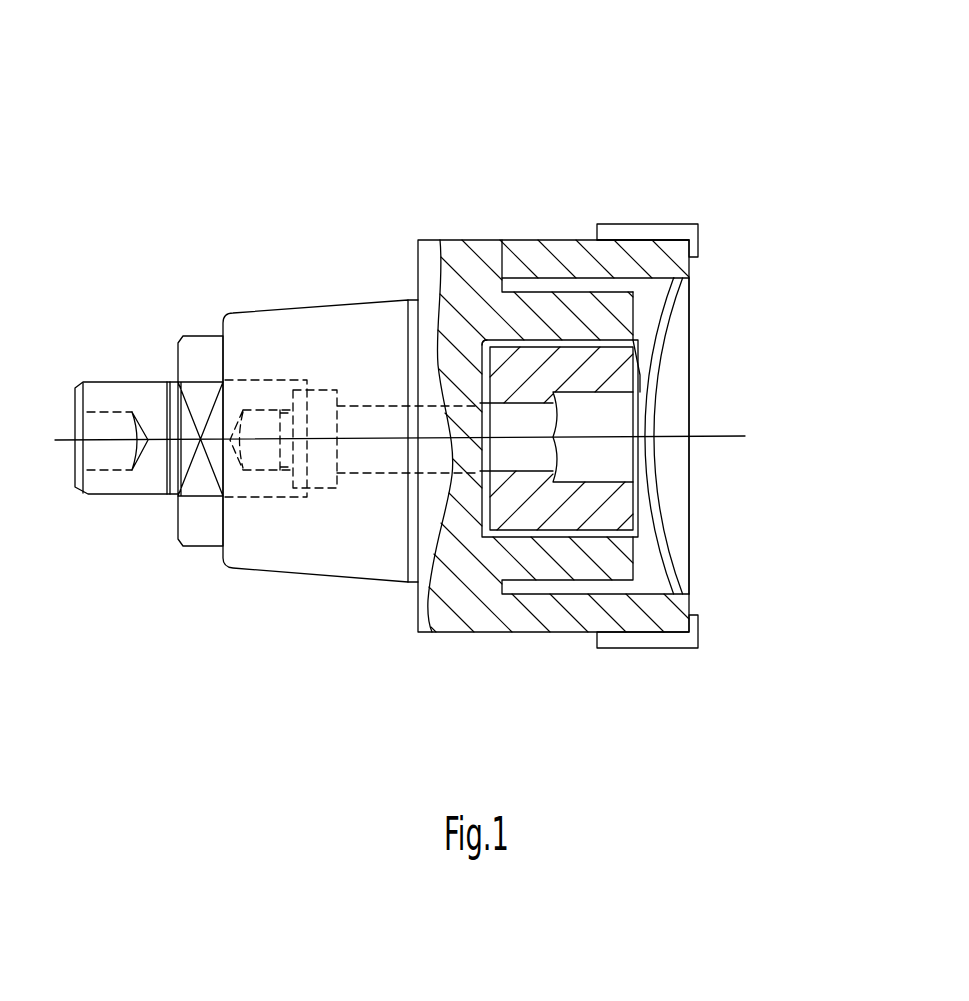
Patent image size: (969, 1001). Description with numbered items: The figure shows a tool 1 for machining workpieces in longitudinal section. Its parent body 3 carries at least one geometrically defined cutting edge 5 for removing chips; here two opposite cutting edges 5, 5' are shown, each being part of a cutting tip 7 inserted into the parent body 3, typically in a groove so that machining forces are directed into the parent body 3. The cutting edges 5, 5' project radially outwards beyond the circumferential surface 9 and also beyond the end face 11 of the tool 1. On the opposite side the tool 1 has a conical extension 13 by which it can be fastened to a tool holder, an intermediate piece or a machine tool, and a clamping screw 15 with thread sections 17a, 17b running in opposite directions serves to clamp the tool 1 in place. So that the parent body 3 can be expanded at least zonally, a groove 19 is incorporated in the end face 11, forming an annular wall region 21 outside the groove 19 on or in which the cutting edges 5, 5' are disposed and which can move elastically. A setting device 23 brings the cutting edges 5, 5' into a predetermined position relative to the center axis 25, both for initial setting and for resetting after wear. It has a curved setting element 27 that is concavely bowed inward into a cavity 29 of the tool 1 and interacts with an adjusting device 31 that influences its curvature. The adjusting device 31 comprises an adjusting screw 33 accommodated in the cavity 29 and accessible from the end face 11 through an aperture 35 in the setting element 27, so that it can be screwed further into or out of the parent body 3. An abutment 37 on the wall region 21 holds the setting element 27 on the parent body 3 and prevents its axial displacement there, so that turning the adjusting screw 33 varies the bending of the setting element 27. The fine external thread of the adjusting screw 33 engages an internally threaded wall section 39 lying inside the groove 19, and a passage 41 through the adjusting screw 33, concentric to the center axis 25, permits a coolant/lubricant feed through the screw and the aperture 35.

The tool 1 is at (333, 170).
The parent body 3 is at (457, 273).
The cutting edge 5 is at (669, 180).
The cutting edge 5' is at (694, 666).
The cutting tip 7 is at (622, 230).
The circumferential surface 9 is at (480, 232).
The end face 11 is at (694, 590).
The conical extension 13 is at (287, 322).
The clamping screw 15 is at (120, 398).
The thread section 17a is at (138, 497).
The thread section 17b is at (268, 490).
The groove 19 is at (530, 288).
The annular wall region 21 is at (547, 262).
The setting device 23 is at (678, 333).
The center axis 25 is at (703, 435).
The setting element 27 is at (650, 360).
The cavity 29 is at (644, 307).
The adjusting device 31 is at (477, 366).
The adjusting screw 33 is at (525, 513).
The aperture 35 is at (645, 465).
The abutment 37 is at (677, 276).
The wall section 39 is at (583, 320).
The passage 41 is at (525, 457).